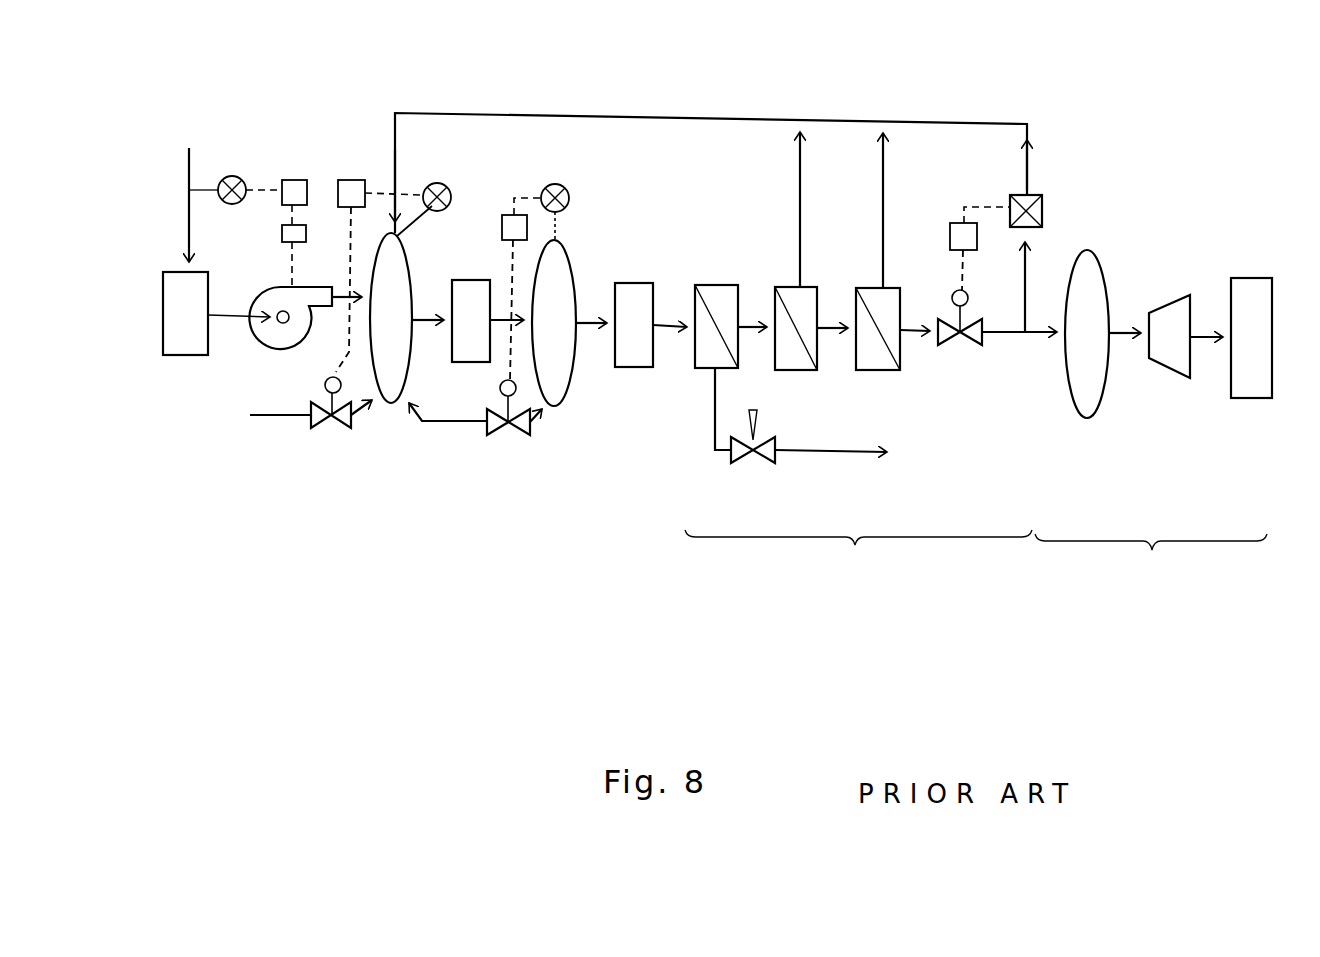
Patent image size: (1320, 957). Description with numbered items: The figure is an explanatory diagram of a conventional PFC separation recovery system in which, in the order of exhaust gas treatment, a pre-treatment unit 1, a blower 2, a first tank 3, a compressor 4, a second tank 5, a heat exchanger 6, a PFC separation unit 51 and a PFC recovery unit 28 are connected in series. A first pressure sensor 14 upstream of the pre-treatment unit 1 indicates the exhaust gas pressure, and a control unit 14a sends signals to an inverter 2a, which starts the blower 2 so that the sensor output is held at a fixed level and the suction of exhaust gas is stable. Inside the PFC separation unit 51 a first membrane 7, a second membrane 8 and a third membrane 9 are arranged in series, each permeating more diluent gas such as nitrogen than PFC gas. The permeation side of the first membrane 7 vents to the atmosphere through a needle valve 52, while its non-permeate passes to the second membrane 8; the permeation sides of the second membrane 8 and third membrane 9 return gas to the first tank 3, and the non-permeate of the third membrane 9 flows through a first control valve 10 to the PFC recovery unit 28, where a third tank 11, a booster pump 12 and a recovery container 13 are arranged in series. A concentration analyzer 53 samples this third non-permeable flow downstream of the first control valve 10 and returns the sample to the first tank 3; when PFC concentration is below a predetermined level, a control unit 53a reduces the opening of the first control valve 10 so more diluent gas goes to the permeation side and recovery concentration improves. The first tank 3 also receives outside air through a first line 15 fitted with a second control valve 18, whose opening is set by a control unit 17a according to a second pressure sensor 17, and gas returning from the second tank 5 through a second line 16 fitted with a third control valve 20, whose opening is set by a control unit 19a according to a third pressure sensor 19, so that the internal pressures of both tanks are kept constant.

The pre-treatment unit 1 is at (180, 355).
The blower 2 is at (258, 340).
The inverter 2a is at (282, 233).
The first tank 3 is at (411, 252).
The compressor 4 is at (478, 290).
The second tank 5 is at (575, 258).
The heat exchanger 6 is at (640, 283).
The first membrane 7 is at (720, 285).
The second membrane 8 is at (785, 287).
The third membrane 9 is at (870, 288).
The first control valve 10 is at (970, 345).
The third tank 11 is at (1085, 420).
The booster pump 12 is at (1173, 372).
The recovery container 13 is at (1250, 398).
The first pressure sensor 14 is at (232, 176).
The control unit 14a is at (291, 180).
The first line 15 is at (282, 415).
The second line 16 is at (448, 421).
The second pressure sensor 17 is at (441, 183).
The control unit 17a is at (352, 180).
The second control valve 18 is at (340, 430).
The third pressure sensor 19 is at (563, 187).
The control unit 19a is at (505, 215).
The third control valve 20 is at (515, 435).
The PFC recovery unit 28 is at (1151, 564).
The PFC separation unit 51 is at (858, 559).
The needle valve 52 is at (762, 415).
The concentration analyzer 53 is at (1045, 205).
The control unit 53a is at (950, 232).